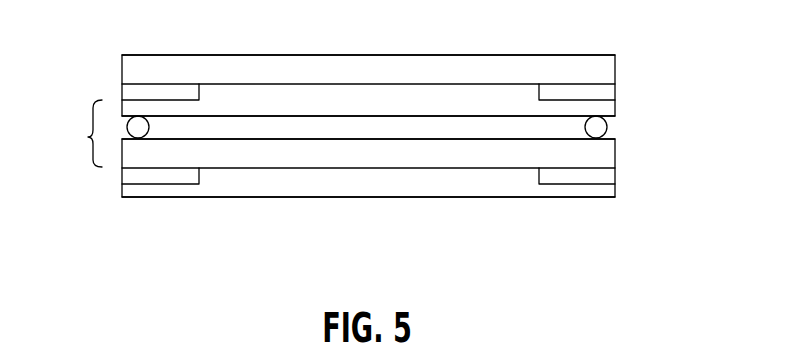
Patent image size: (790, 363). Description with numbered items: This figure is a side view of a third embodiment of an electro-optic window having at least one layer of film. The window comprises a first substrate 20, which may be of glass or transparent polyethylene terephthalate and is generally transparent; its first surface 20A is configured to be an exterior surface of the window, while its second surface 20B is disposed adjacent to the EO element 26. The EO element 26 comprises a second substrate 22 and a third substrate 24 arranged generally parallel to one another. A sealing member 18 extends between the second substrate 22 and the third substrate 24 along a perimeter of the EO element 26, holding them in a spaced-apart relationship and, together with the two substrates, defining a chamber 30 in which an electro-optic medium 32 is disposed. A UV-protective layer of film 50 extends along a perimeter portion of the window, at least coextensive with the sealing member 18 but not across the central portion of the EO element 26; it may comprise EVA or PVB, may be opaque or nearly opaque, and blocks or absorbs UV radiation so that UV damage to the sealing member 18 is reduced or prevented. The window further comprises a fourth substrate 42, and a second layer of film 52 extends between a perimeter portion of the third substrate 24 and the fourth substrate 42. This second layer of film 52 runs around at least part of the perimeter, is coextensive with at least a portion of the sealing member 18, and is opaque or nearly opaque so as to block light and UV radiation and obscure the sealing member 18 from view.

The sealing member 18 is at (606, 125).
The first substrate 20 is at (328, 82).
The first surface of first substrate 20A is at (405, 55).
The second surface of first substrate 20B is at (463, 84).
The second substrate 22 is at (280, 116).
The third substrate 24 is at (288, 155).
The EO element 26 is at (79, 133).
The chamber 30 is at (173, 127).
The electro-optic medium 32 is at (218, 127).
The fourth substrate 42 is at (446, 183).
The UV-protective layer of film 50 is at (128, 92).
The second layer of film 52 is at (128, 175).